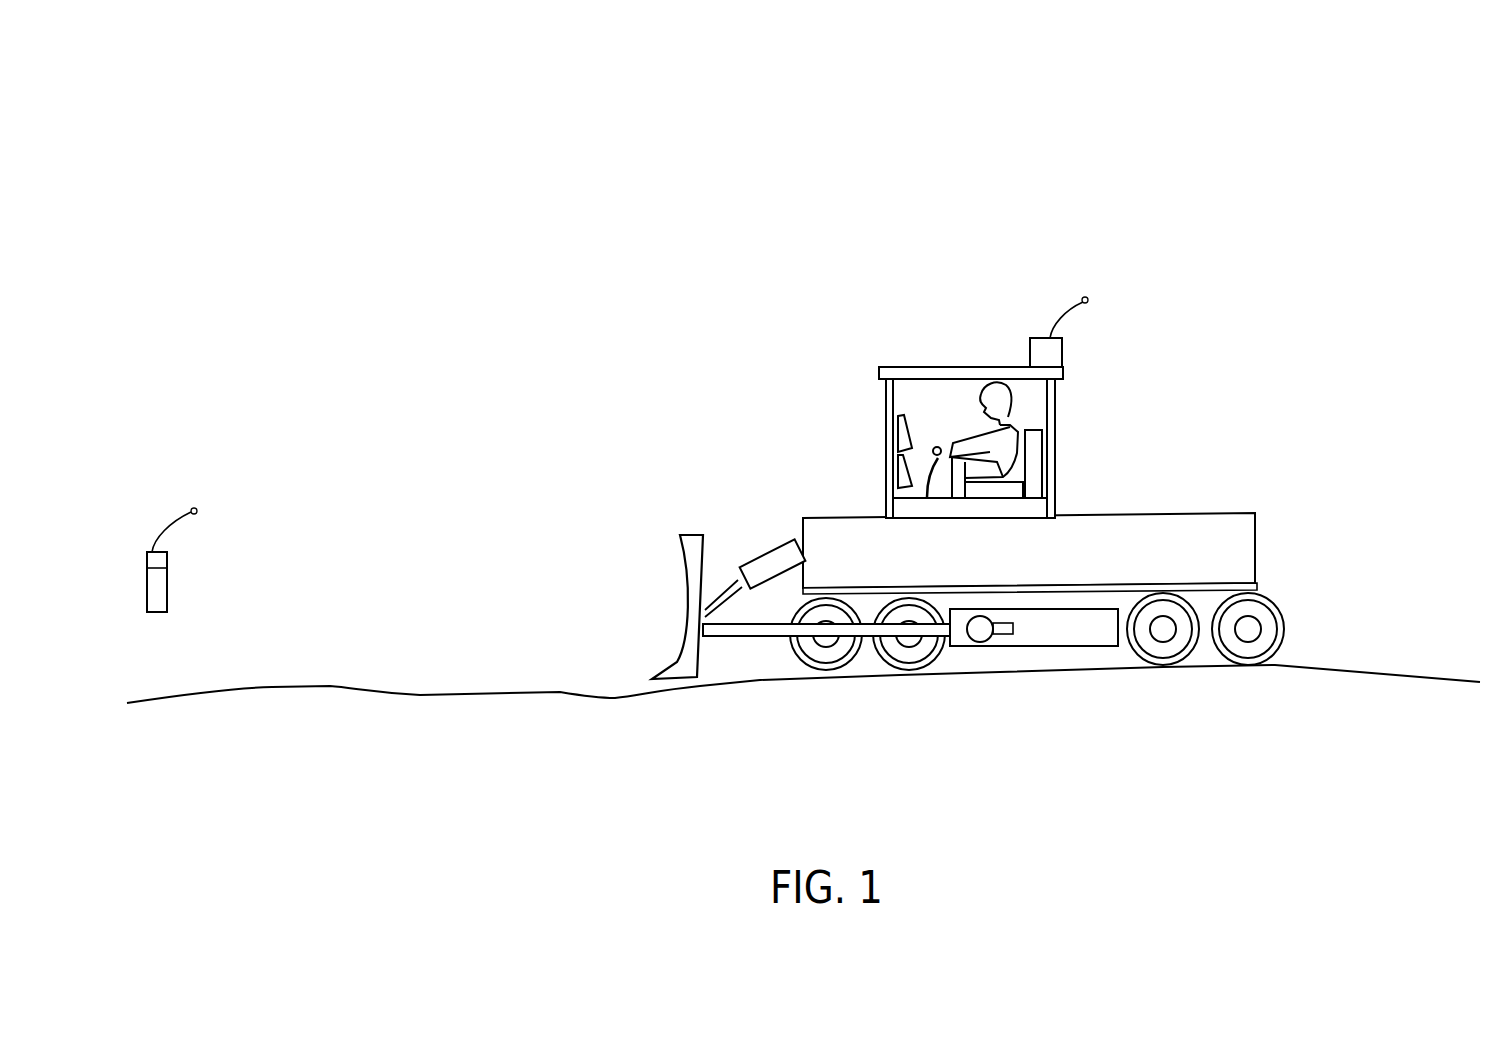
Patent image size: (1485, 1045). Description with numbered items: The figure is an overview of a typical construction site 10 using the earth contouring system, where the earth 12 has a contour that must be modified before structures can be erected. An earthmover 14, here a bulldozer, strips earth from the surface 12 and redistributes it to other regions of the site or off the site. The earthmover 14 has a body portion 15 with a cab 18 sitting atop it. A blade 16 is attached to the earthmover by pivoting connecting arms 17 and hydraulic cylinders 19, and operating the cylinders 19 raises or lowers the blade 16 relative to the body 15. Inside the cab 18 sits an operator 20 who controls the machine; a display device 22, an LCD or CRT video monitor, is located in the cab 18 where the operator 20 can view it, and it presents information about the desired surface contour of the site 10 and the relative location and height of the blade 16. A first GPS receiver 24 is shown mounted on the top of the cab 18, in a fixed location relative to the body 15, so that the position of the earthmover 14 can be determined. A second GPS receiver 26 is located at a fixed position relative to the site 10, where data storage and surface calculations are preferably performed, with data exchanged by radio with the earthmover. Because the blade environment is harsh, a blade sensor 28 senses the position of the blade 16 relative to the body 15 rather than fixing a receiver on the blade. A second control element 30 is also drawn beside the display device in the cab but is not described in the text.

The construction site 10 is at (392, 482).
The earth 12 is at (387, 692).
The earthmover 14 is at (1058, 553).
The body portion 15 is at (995, 568).
The blade 16 is at (694, 543).
The connecting arms 17 is at (760, 637).
The cab 18 is at (1050, 414).
The hydraulic cylinders 19 is at (768, 565).
The operator 20 is at (987, 386).
The display device 22 is at (897, 427).
The first GPS receiver 24 is at (1052, 351).
The second GPS receiver 26 is at (162, 563).
The blade sensor 28 is at (1013, 628).
The control lever 30 is at (897, 473).